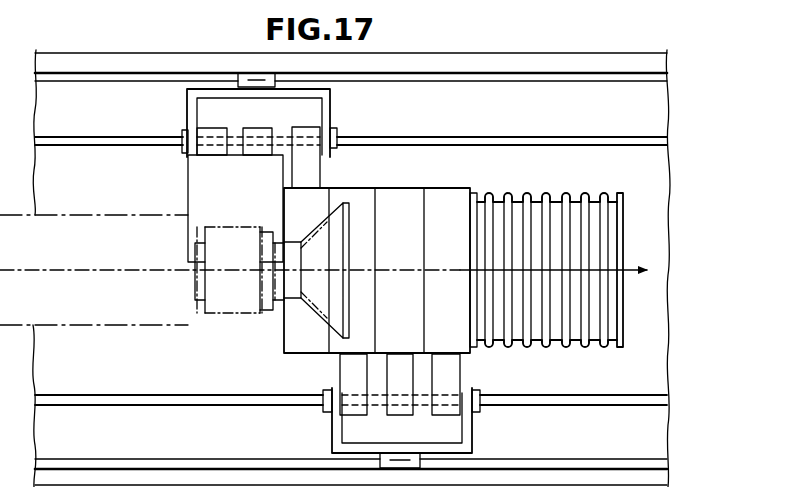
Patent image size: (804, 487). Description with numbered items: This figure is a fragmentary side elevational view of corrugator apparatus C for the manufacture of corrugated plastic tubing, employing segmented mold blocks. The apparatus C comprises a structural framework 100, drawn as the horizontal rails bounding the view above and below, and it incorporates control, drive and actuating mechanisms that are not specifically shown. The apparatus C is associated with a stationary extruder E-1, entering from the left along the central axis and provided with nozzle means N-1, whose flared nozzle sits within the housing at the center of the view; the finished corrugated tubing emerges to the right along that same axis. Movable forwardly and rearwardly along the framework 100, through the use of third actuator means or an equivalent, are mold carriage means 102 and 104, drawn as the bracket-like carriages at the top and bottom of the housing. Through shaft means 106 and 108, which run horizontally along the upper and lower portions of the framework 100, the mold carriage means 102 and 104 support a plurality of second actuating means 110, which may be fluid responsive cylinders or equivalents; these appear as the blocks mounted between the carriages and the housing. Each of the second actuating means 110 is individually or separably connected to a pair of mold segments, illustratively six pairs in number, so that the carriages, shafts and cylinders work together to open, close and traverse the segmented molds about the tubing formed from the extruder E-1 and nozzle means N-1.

The structural framework 100 is at (510, 52).
The mold carriage means 102 is at (331, 97).
The mold carriage means 104 is at (474, 433).
The shaft means 106 is at (452, 137).
The shaft means 108 is at (212, 406).
The second actuating means 110 is at (297, 128).
The stationary extruder E-1 is at (80, 214).
The nozzle means N-1 is at (323, 323).
The corrugator apparatus C is at (678, 195).